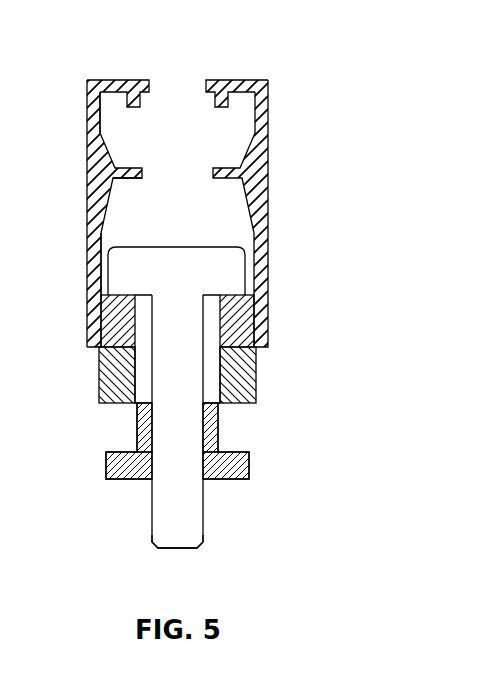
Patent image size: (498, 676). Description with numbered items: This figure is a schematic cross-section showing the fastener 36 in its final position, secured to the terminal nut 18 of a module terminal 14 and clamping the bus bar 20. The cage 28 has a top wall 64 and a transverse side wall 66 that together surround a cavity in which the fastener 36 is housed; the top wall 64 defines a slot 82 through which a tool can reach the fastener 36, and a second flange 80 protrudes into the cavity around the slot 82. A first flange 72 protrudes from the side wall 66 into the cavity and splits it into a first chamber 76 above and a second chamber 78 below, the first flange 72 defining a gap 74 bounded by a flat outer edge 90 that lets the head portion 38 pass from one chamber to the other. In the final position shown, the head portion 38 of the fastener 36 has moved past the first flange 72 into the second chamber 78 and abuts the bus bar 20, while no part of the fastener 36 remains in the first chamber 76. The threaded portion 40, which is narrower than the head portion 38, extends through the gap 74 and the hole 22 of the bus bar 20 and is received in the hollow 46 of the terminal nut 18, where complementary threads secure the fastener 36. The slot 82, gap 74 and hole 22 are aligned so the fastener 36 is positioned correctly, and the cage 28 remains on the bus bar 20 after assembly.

The module terminal 14 is at (254, 387).
The terminal nut 18 is at (248, 467).
The bus bar 20 is at (240, 317).
The hole 22 is at (222, 340).
The cage 28 is at (268, 124).
The fastener 36 is at (204, 518).
The head portion 38 is at (256, 257).
The threaded portion 40 is at (151, 508).
The hollow 46 is at (140, 420).
The top wall 64 is at (246, 80).
The side wall 66 is at (87, 150).
The first flange 72 is at (138, 168).
The gap 74 is at (141, 209).
The first chamber 76 is at (121, 127).
The second chamber 78 is at (223, 204).
The second flange 80 is at (132, 107).
The slot 82 is at (185, 73).
The outer edge 90 is at (140, 178).